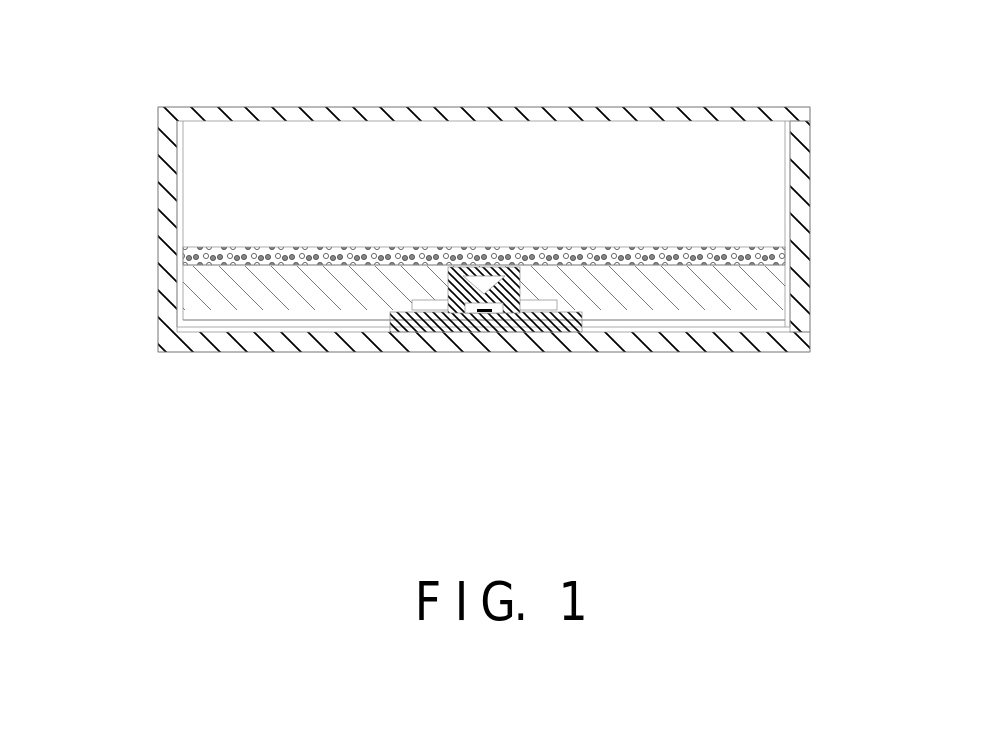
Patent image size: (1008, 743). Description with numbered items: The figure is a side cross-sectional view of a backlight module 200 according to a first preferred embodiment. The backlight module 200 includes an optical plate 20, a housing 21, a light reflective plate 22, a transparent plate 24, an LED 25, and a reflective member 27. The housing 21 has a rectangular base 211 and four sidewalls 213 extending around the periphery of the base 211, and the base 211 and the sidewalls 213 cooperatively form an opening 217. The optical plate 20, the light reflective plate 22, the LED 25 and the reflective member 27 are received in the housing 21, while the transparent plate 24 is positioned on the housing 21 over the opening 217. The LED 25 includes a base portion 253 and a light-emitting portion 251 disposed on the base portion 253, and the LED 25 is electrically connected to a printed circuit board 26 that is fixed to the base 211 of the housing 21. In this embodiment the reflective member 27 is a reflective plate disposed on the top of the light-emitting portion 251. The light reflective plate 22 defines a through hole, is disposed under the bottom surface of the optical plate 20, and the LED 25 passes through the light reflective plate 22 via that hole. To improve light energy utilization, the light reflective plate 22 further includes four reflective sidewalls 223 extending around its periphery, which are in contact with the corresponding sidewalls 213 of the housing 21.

The backlight module 200 is at (160, 76).
The housing 21 is at (457, 216).
The base 211 is at (200, 333).
The sidewalls 213 is at (168, 263).
The transparent plate 24 is at (777, 113).
The opening 217 is at (772, 148).
The reflective sidewalls 223 is at (790, 186).
The optical plate 20 is at (775, 287).
The light reflective plate 22 is at (768, 331).
The LED 25 is at (480, 343).
The light-emitting portion 251 is at (460, 292).
The base portion 253 is at (500, 312).
The printed circuit board 26 is at (390, 323).
The reflective member 27 is at (477, 265).